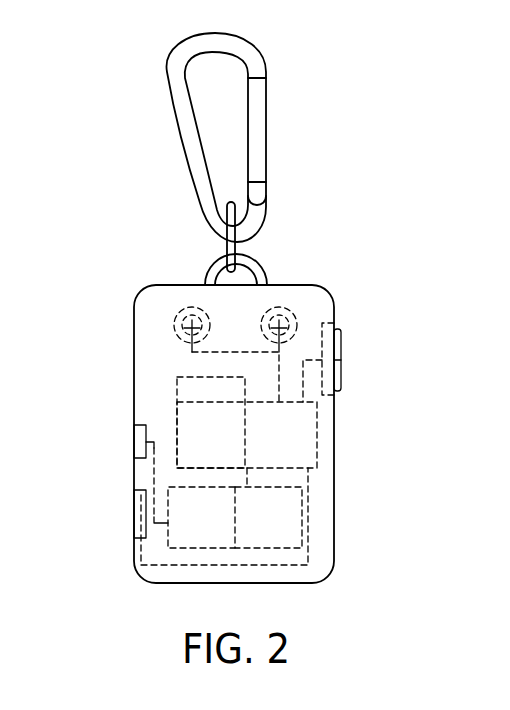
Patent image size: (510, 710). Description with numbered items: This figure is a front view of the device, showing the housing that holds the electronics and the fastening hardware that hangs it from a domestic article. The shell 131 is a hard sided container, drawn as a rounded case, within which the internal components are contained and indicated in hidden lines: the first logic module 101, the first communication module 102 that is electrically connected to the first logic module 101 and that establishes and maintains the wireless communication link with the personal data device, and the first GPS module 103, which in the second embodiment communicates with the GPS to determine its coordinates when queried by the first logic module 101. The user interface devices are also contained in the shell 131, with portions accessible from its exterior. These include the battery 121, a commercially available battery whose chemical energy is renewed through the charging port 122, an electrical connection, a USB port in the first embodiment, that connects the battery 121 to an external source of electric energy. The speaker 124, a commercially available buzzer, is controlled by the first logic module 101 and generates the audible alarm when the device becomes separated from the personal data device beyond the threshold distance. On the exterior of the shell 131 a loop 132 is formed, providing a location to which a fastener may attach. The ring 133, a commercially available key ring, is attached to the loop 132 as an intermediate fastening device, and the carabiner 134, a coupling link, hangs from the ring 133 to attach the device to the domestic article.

The first logic module 101 is at (302, 438).
The first communication module 102 is at (188, 413).
The first GPS module 103 is at (288, 523).
The battery 121 is at (192, 538).
The charging port 122 is at (141, 512).
The speaker 124 is at (187, 322).
The shell 131 is at (328, 300).
The loop 132 is at (265, 270).
The ring 133 is at (236, 245).
The carabiner 134 is at (265, 142).